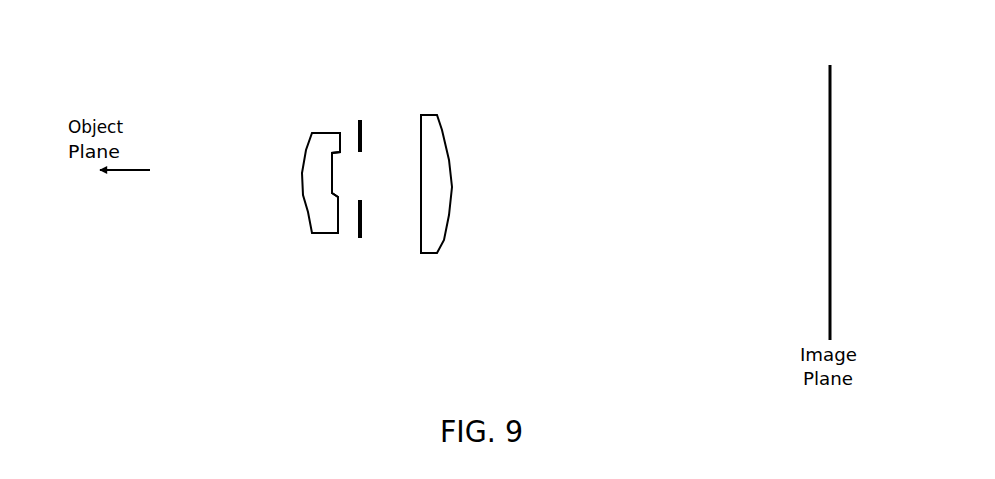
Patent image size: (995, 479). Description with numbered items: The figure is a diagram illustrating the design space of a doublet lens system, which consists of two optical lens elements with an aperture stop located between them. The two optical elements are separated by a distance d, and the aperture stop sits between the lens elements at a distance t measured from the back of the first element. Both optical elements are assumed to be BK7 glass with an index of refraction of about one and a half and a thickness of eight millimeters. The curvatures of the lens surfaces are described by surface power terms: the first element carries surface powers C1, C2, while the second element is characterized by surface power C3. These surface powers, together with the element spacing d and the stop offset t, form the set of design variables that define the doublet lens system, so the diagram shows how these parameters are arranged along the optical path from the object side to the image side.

The surface power C1 is at (255, 217).
The surface power C2 is at (325, 215).
The surface power C3 is at (510, 133).
The distance from the back of the first element to the aperture stop t is at (356, 100).
The distance separating the two optical elements d is at (418, 267).